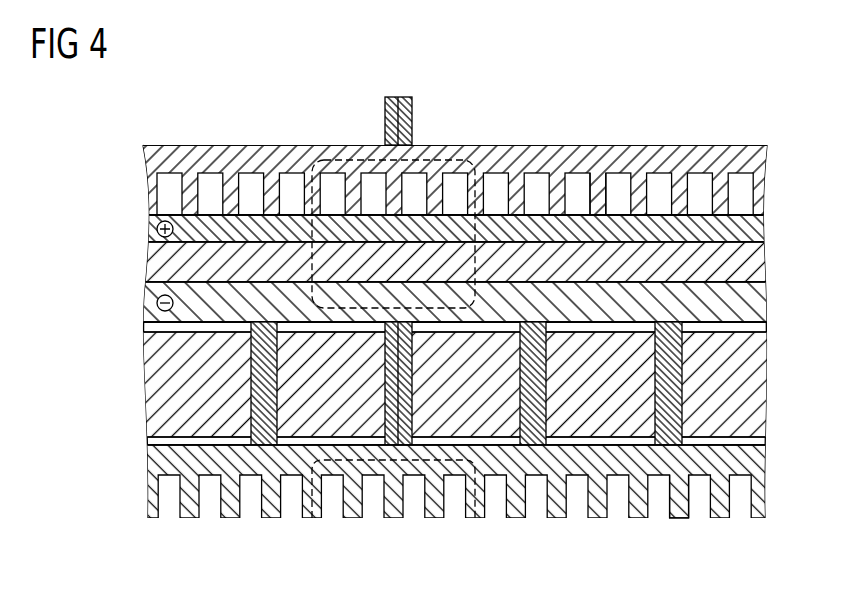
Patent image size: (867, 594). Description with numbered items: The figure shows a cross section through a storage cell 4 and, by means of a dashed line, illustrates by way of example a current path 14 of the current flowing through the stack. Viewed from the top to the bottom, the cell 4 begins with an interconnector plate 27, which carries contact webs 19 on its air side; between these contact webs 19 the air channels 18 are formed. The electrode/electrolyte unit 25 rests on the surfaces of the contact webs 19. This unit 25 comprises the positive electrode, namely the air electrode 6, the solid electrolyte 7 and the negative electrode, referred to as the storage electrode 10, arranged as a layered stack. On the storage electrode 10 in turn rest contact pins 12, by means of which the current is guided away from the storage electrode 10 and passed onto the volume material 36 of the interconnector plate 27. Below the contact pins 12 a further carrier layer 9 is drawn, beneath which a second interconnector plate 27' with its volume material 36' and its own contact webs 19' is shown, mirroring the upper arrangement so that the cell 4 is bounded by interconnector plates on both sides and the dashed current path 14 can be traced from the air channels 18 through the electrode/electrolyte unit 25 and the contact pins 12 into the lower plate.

The storage cell 4 is at (148, 460).
The electrode/electrolyte unit 25 is at (150, 322).
The air electrode 6 is at (758, 231).
The solid electrolyte 7 is at (752, 264).
The storage electrode 10 is at (745, 302).
The carrier substrate 9 is at (758, 355).
The contact pins 12 is at (405, 99).
The current path 14 is at (433, 160).
The air channels 18 is at (573, 185).
The contact webs 19 is at (611, 148).
The interconnector plate 27 is at (455, 148).
The volume material 36 is at (455, 148).
The lower cooler base plate 27' is at (480, 455).
The lower heat sink 36' is at (455, 509).
The lower cooling fins 19' is at (686, 529).